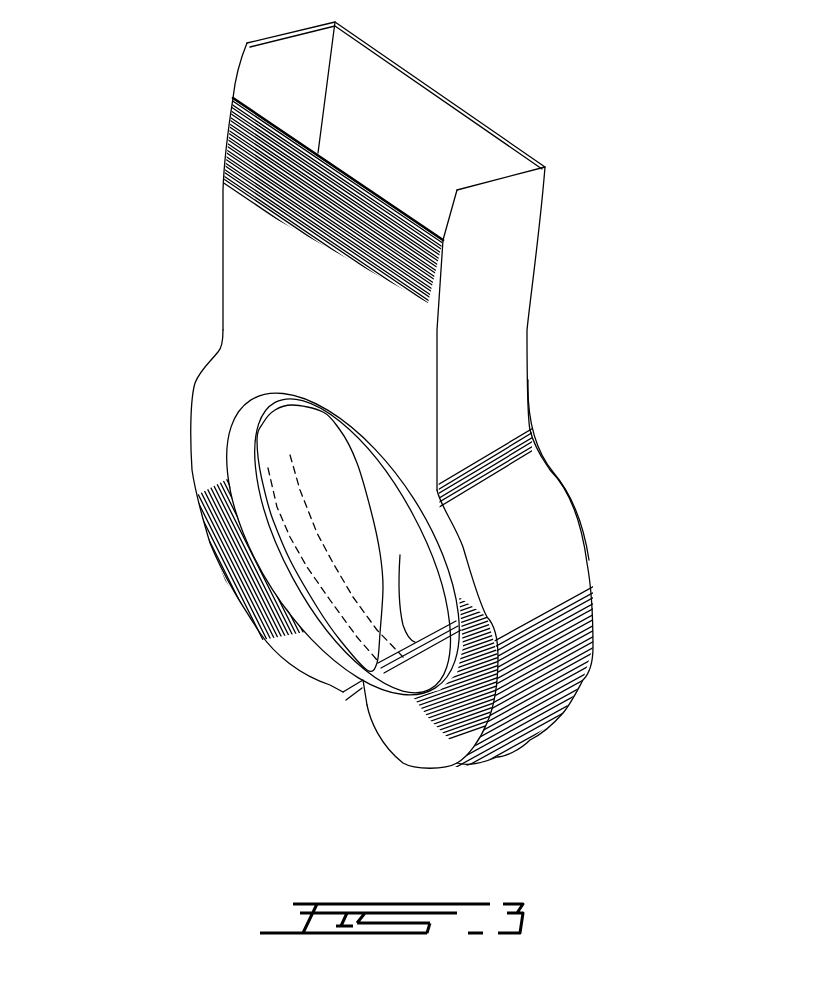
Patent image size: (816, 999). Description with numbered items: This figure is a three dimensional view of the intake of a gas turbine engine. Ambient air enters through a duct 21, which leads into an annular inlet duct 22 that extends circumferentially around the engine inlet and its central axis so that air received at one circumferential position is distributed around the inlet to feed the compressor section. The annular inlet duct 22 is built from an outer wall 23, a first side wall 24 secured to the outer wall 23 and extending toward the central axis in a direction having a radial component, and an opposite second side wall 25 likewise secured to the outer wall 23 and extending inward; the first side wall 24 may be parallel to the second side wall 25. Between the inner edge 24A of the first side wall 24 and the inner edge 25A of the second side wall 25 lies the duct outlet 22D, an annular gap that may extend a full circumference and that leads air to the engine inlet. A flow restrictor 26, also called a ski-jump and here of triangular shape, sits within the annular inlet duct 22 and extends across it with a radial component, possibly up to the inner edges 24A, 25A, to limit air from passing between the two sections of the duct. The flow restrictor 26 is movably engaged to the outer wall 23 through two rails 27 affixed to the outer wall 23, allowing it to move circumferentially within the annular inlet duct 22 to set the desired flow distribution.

The duct 21 is at (520, 264).
The annular inlet duct 22 is at (633, 426).
The duct outlet 22D is at (344, 524).
The outer wall 23 is at (563, 627).
The first side wall 24 is at (218, 392).
The inner edge of the first side wall 24A is at (227, 475).
The second side wall 25 is at (580, 533).
The inner edge of the second side wall 25A is at (455, 660).
The flow restrictor 26 is at (350, 716).
The rails 27 is at (318, 566).